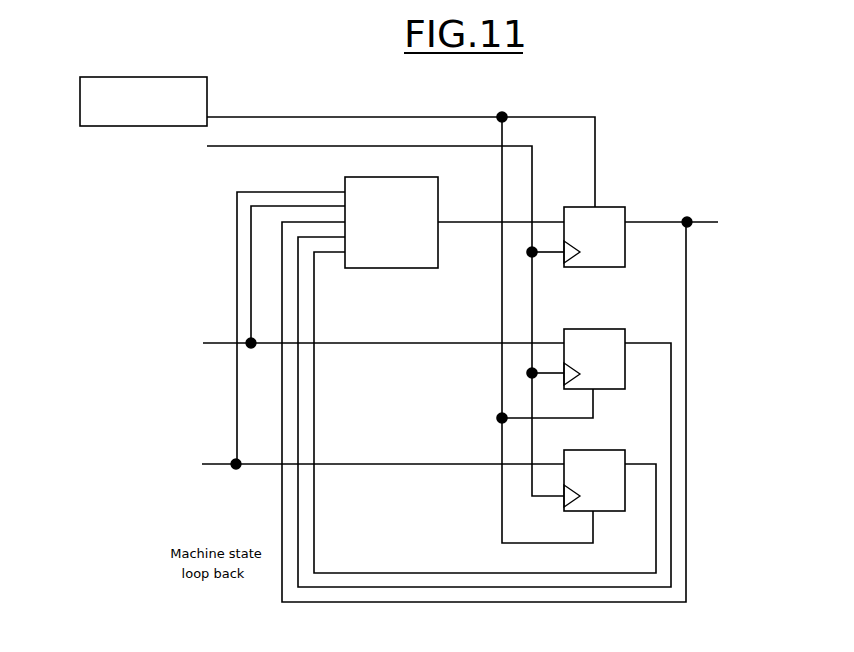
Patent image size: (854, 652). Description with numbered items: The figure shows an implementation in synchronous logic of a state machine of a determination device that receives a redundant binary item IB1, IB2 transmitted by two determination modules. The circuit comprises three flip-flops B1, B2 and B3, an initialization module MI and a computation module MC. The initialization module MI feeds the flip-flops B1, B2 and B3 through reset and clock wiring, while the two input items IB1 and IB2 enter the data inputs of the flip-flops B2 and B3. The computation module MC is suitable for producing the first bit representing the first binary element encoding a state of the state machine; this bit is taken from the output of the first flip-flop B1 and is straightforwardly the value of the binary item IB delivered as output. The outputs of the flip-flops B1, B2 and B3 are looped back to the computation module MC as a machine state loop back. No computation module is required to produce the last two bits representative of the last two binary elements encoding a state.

The initialization module MI is at (143, 77).
The computation module MC is at (392, 268).
The first flip-flop B1 is at (623, 200).
The second flip-flop B2 is at (623, 322).
The third flip-flop B3 is at (623, 443).
The binary item IB is at (684, 222).
The redundant binary item IB1 is at (367, 342).
The redundant binary item IB2 is at (366, 463).